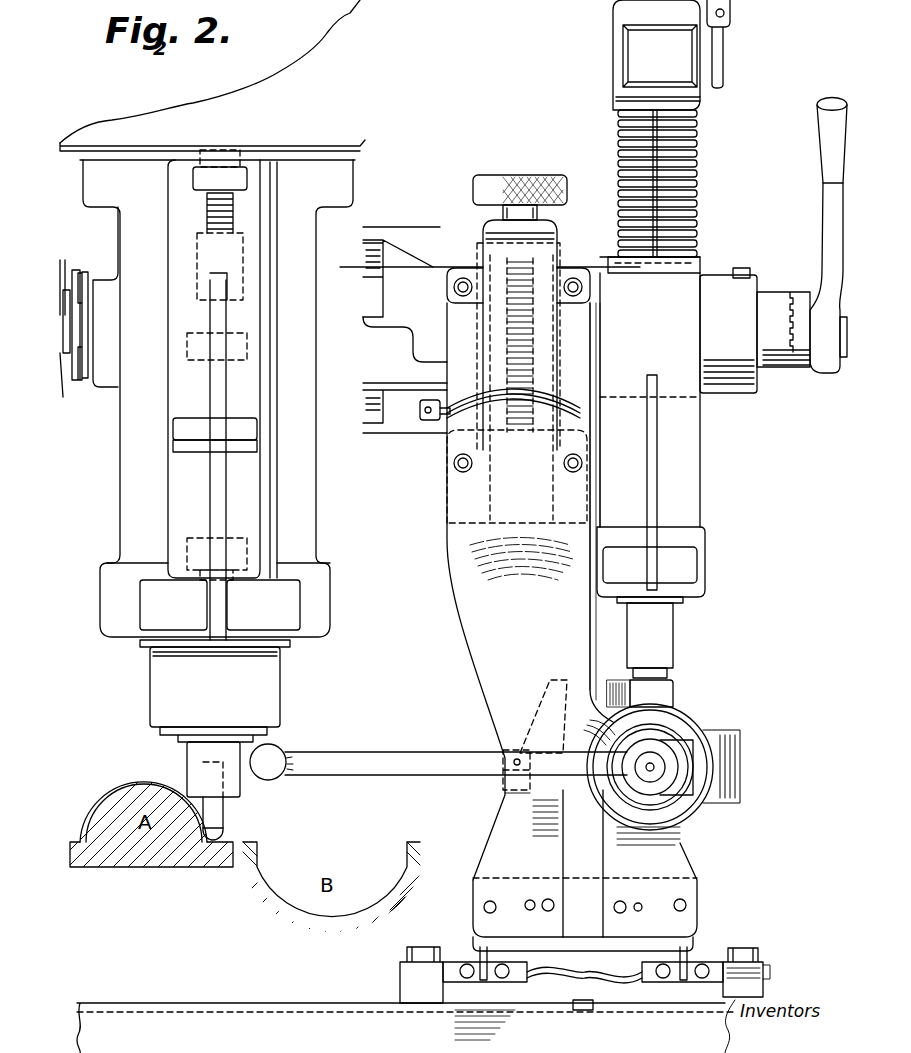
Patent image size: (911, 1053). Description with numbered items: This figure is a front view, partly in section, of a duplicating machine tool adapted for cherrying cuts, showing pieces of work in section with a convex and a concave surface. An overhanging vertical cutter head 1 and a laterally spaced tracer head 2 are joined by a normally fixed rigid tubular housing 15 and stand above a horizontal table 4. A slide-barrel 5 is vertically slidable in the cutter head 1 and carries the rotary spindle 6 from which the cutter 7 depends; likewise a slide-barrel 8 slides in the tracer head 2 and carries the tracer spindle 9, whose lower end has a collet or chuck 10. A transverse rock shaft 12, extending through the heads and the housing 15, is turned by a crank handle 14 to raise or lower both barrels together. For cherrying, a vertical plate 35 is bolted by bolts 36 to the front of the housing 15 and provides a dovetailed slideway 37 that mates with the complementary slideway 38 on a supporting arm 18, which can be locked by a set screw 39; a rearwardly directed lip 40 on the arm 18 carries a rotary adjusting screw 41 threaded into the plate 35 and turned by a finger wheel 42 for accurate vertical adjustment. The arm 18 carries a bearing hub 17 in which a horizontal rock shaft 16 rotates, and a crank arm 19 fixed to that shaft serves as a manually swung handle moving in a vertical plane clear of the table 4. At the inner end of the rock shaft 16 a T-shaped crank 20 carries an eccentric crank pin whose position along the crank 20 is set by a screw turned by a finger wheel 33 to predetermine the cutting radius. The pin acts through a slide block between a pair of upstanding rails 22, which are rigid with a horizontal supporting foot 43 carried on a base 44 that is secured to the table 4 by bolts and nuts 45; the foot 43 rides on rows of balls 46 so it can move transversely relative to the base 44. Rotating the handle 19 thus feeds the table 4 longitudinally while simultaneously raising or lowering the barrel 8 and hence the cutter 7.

The cutter head 1 is at (313, 497).
The tracer head 2 is at (690, 463).
The table 4 is at (578, 1030).
The slide-barrel 5 is at (272, 693).
The spindle 6 is at (237, 780).
The cutter 7 is at (220, 815).
The slide-barrel 8 is at (670, 637).
The tracer spindle 9 is at (670, 678).
The collet or chuck 10 is at (670, 698).
The rock shaft 12 is at (785, 288).
The crank handle 14 is at (830, 192).
The tubular housing 15 is at (737, 387).
The rock shaft 16 is at (657, 770).
The bearing hub 17 is at (690, 723).
The supporting arm 18 is at (522, 639).
The crank arm 19 is at (397, 760).
The crank 20 is at (755, 767).
The rails 22 is at (633, 860).
The finger wheel 33 is at (507, 785).
The plate 35 is at (583, 280).
The bolts 36 is at (456, 470).
The dovetailed slideway 37 is at (627, 340).
The dovetailed slideway 38 is at (553, 375).
The set screw 39 is at (433, 428).
The lip 40 is at (547, 233).
The adjusting screw 41 is at (573, 337).
The finger wheel 42 is at (558, 180).
The supporting foot 43 is at (593, 940).
The base 44 is at (585, 985).
The bolts and nuts 45 is at (770, 937).
The balls 46 is at (668, 975).